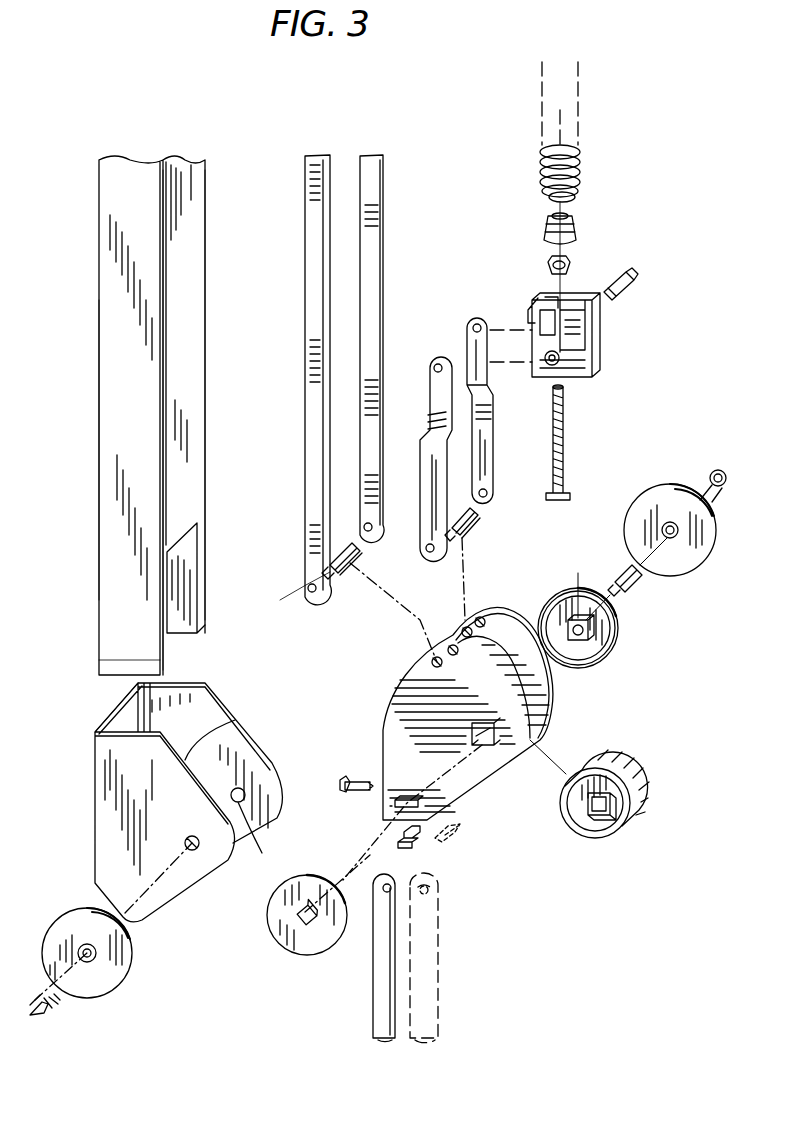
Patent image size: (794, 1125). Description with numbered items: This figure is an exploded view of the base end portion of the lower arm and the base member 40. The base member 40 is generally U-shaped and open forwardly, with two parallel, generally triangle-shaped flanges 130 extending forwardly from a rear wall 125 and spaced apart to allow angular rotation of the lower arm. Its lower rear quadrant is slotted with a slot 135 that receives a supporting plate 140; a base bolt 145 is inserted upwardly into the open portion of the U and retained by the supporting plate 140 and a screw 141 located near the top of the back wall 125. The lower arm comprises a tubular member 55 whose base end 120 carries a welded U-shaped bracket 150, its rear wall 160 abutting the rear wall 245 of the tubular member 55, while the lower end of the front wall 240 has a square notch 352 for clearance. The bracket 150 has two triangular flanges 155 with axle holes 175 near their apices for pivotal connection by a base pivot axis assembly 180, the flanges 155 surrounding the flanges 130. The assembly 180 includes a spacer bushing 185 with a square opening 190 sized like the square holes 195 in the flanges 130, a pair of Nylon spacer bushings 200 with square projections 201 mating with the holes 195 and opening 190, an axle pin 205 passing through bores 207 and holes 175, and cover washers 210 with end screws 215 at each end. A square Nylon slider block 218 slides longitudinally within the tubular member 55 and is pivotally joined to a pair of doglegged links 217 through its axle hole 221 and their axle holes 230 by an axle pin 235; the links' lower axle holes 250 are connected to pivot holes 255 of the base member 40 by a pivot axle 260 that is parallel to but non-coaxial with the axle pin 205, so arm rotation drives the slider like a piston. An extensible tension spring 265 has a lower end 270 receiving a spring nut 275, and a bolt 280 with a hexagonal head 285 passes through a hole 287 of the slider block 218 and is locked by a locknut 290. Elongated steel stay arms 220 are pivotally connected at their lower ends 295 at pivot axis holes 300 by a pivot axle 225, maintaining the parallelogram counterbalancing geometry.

The base member 40 is at (398, 805).
The tubular member 55 is at (100, 300).
The base end 120 is at (108, 676).
The rear wall 125 is at (383, 735).
The flanges 130 is at (552, 708).
The slot 135 is at (405, 836).
The supporting plate 140 is at (412, 850).
The screw 141 is at (345, 778).
The base bolt 145 is at (395, 1000).
The U-shaped bracket 150 is at (98, 806).
The flanges 155 is at (228, 723).
The rear wall 160 is at (95, 716).
The axle holes 175 is at (199, 845).
The base pivot axis assembly 180 is at (745, 480).
The spacer bushing 185 is at (627, 771).
The square opening 190 is at (600, 815).
The square holes 195 is at (495, 738).
The spacer bushings 200 is at (620, 630).
The square projections 201 is at (578, 573).
The axle pin 205 is at (633, 592).
The bores 207 is at (578, 643).
The cover washers 210 is at (130, 958).
The end screws 215 is at (50, 1010).
The doglegged links 217 is at (437, 410).
The slider block 218 is at (535, 305).
The stay arms 220 is at (365, 228).
The axle hole 221 is at (558, 362).
The pivot axle 225 is at (348, 566).
The axle holes 230 is at (468, 322).
The axle pin 235 is at (632, 286).
The front wall 240 is at (190, 365).
The rear wall 245 is at (100, 401).
The axle holes 250 is at (468, 532).
The pivot holes 255 is at (535, 612).
The pivot axle 260 is at (455, 512).
The extensible tension spring 265 is at (580, 155).
The lower end 270 is at (575, 195).
The spring nut 275 is at (577, 233).
The bolt 280 is at (565, 455).
The hexagonal head 285 is at (558, 502).
The hole 287 is at (557, 297).
The locknut 290 is at (568, 265).
The lower ends 295 is at (296, 585).
The pivot axis holes 300 is at (432, 662).
The square notch 352 is at (190, 560).